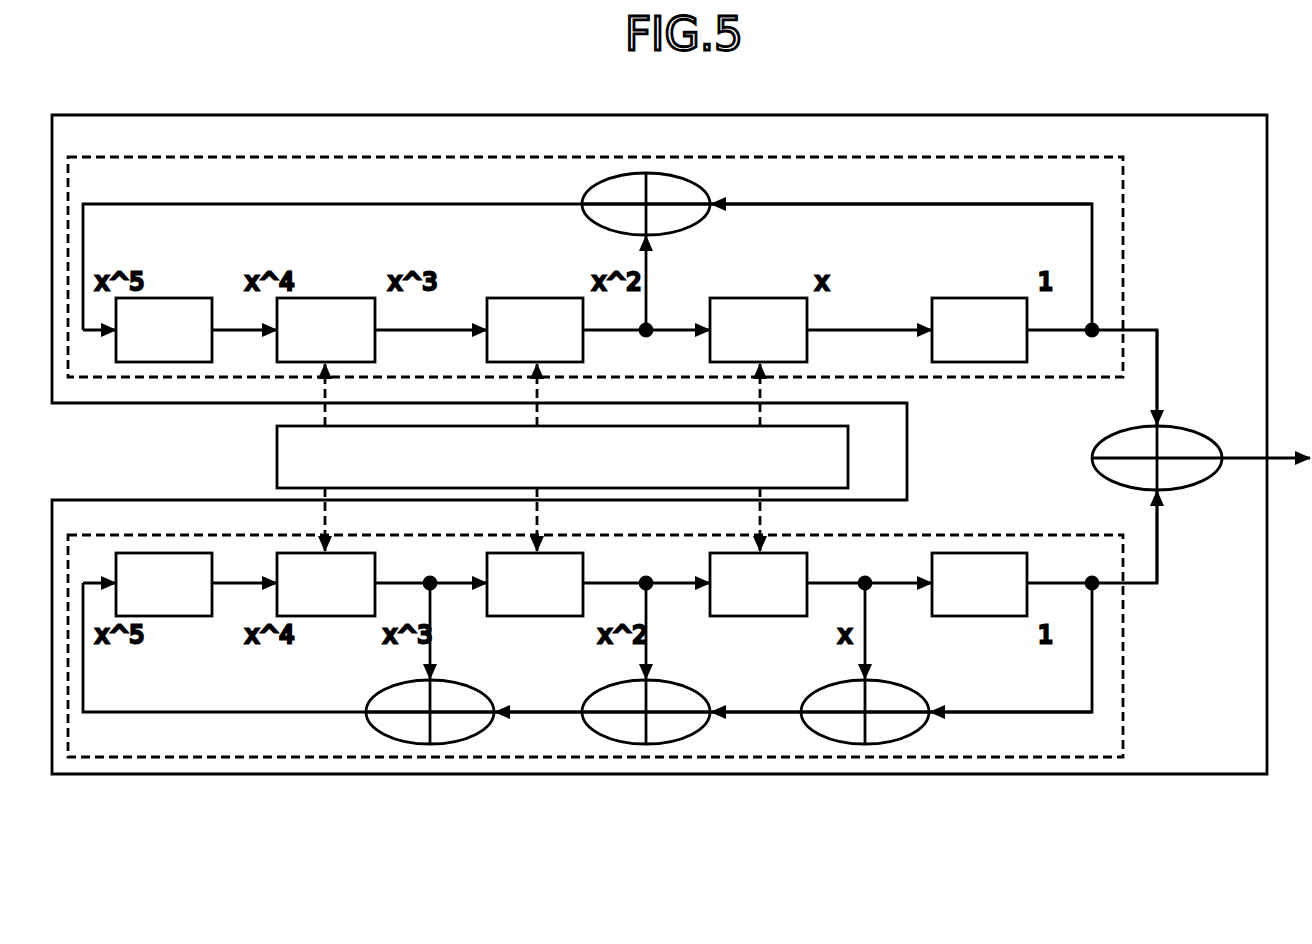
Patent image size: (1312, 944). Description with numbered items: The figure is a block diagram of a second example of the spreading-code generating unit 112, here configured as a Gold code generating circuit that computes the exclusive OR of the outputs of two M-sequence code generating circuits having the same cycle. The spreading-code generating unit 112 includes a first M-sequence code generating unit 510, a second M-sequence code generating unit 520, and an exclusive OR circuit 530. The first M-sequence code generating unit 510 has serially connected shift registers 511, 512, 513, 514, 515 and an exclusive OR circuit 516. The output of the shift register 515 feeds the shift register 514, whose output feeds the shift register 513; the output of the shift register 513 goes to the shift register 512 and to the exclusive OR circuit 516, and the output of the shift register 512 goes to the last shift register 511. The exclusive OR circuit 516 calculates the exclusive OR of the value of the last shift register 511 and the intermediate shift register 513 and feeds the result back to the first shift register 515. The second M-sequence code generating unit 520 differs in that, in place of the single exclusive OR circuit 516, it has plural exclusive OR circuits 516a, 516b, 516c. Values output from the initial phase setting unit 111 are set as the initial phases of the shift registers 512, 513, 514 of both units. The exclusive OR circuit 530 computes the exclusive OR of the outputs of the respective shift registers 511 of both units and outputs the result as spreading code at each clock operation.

The spreading-code generating unit 112 is at (1190, 115).
The first M-sequence code generating unit 510 is at (735, 157).
The second M-sequence code generating unit 520 is at (983, 535).
The initial phase setting unit 111 is at (277, 452).
The shift register 511 is at (975, 298).
The shift register 512 is at (755, 298).
The shift register 513 is at (535, 298).
The shift register 514 is at (325, 298).
The shift register 515 is at (163, 298).
The exclusive OR circuit 516 is at (646, 173).
The exclusive OR circuit 516a is at (865, 745).
The exclusive OR circuit 516b is at (646, 745).
The exclusive OR circuit 516c is at (430, 745).
The exclusive OR circuit 530 is at (1183, 428).